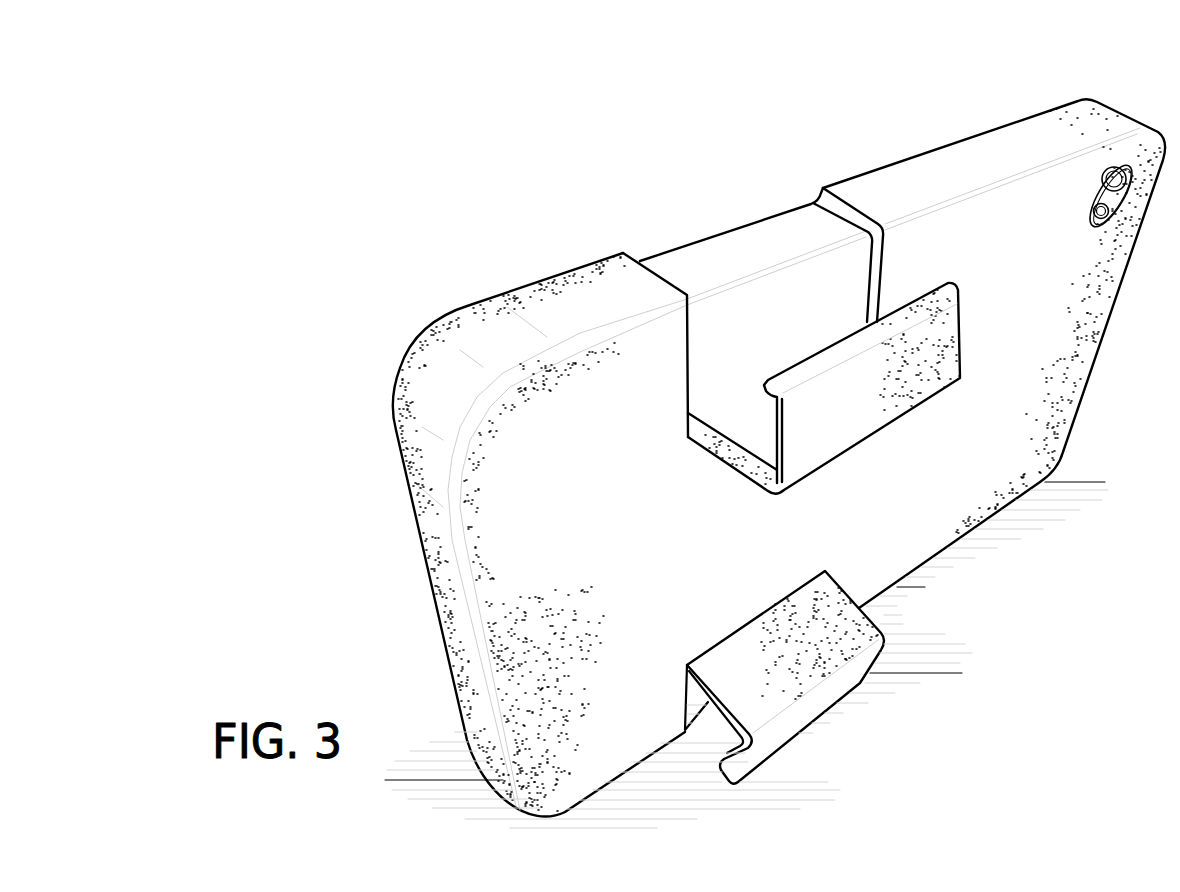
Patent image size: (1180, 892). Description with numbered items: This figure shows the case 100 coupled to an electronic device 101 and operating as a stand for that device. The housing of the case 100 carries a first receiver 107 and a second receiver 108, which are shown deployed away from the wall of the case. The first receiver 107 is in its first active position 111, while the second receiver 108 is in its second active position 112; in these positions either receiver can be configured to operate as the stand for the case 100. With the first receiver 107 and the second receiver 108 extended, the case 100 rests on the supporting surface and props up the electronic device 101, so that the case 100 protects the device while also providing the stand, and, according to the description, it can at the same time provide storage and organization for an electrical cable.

The protective case 100 is at (420, 247).
The upper clip 101 is at (720, 258).
The lower plate 107 is at (938, 352).
The support surface 108 is at (882, 633).
The connecting strip 111 is at (913, 289).
The bottom clip 112 is at (830, 743).